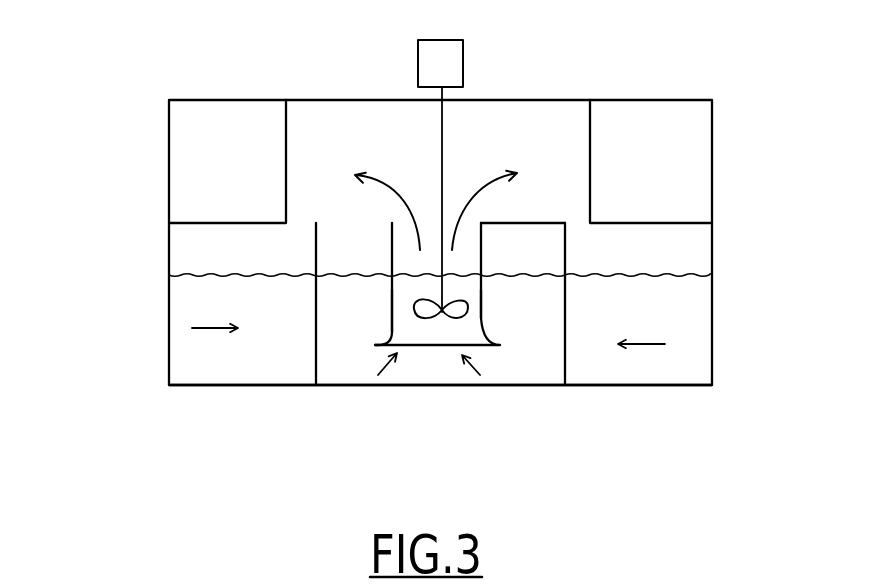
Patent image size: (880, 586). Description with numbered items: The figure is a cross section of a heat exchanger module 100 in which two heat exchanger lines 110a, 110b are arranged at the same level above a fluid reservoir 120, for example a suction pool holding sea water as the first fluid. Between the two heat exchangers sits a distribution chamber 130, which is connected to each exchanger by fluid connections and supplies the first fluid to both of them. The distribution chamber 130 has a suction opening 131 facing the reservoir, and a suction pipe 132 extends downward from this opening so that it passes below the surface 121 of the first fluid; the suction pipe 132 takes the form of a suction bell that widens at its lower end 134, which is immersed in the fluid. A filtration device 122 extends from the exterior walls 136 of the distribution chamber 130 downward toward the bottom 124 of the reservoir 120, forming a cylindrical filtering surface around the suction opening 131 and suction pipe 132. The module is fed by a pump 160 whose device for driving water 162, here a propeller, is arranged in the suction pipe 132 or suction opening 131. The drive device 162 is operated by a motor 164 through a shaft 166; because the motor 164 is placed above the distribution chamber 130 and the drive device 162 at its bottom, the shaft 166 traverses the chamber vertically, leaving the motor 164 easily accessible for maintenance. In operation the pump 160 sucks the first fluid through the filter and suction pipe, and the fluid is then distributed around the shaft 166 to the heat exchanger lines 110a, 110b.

The heat exchanger module 100 is at (747, 104).
The first heat exchanger line 110a is at (189, 146).
The second heat exchanger line 110b is at (695, 176).
The fluid reservoir 120 is at (695, 357).
The surface of the first fluid 121 is at (668, 276).
The filtration device 122 is at (316, 305).
The bottom of the first fluid reservoir 124 is at (470, 385).
The distribution chamber 130 is at (540, 125).
The suction opening 131 is at (447, 235).
The suction pipe 132 is at (387, 302).
The lower end of the suction pipe 134 is at (485, 320).
The exterior walls of the distribution chamber 136 is at (537, 223).
The pump 160 is at (342, 228).
The device for driving water 162 is at (423, 318).
The motor 164 is at (418, 58).
The shaft 166 is at (442, 162).